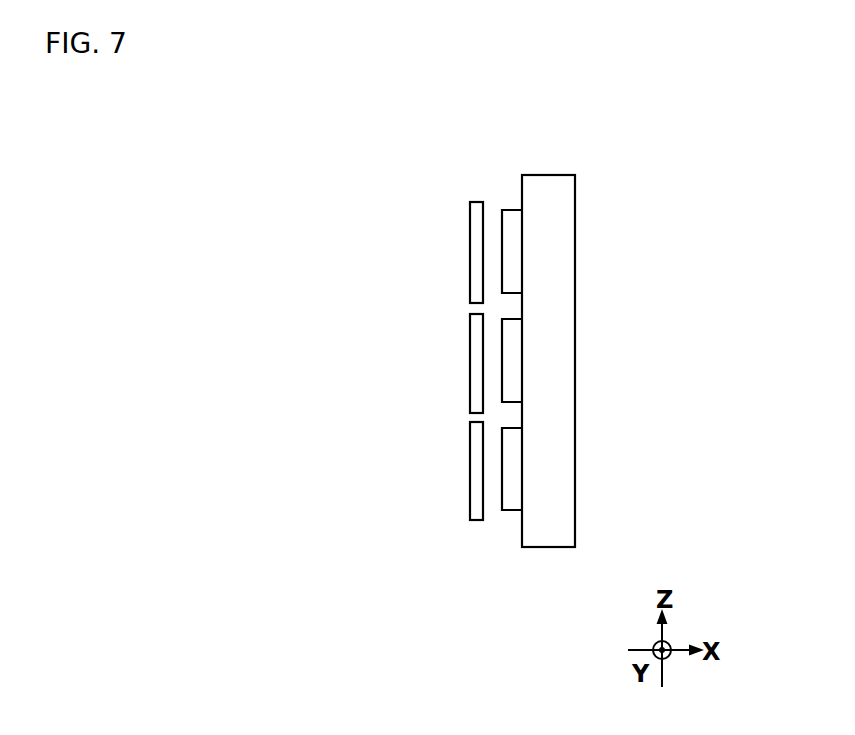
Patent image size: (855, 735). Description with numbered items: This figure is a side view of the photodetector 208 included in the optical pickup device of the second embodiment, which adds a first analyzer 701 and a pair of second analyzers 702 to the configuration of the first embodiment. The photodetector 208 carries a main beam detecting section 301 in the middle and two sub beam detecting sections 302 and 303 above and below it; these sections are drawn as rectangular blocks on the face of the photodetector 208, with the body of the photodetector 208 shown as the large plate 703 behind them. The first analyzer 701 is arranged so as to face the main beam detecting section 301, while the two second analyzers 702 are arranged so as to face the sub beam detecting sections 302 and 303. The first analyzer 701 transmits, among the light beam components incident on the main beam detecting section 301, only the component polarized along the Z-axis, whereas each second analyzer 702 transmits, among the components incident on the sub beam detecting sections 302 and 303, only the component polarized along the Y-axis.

The photodetector 208 is at (585, 162).
The main beam detecting section 301 is at (516, 345).
The sub beam detecting section 302 is at (516, 214).
The sub beam detecting section 303 is at (513, 505).
The first analyzer 701 is at (475, 358).
The second analyzer 702 is at (475, 248).
The substrate 703 is at (563, 350).